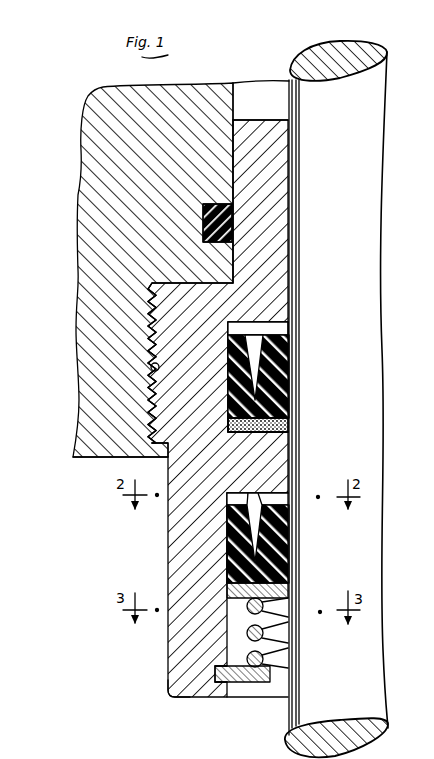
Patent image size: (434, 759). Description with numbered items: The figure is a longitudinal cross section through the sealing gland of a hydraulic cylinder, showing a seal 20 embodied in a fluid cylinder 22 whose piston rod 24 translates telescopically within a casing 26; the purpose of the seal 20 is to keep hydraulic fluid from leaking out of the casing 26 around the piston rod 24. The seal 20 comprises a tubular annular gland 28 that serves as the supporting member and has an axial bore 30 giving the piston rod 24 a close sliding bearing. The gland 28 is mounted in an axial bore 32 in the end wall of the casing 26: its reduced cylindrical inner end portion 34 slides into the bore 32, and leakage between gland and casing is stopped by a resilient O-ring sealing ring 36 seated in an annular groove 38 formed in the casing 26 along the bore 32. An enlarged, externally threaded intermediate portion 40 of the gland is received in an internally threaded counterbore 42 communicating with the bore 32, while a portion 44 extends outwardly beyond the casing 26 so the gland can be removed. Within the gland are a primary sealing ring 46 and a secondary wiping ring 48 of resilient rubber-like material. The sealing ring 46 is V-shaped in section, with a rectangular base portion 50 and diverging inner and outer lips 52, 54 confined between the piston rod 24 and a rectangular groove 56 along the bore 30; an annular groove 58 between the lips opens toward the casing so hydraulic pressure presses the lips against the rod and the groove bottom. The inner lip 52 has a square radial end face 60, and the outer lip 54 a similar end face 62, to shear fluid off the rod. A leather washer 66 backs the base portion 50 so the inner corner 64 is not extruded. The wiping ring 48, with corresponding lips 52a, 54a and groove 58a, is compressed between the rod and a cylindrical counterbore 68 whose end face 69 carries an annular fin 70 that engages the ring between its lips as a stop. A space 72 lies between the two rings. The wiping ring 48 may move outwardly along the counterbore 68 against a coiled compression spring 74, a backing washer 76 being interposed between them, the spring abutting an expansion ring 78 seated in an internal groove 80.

The seal 20 is at (255, 701).
The fluid cylinder 22 is at (54, 452).
The piston rod 24 is at (341, 44).
The casing 26 is at (100, 126).
The gland 28 is at (168, 681).
The axial bore 30 is at (290, 296).
The axial bore 32 is at (240, 88).
The inner end portion 34 is at (265, 148).
The sealing ring 36 is at (205, 235).
The annular groove 38 is at (205, 210).
The intermediate portion 40 is at (150, 406).
The counterbore 42 is at (151, 366).
The portion 44 is at (175, 549).
The sealing ring 46 is at (291, 395).
The wiping ring 48 is at (291, 568).
The base portion 50 is at (288, 412).
The inner lip 52 is at (288, 368).
The inner lip 52a is at (283, 521).
The outer lip 54 is at (227, 354).
The outer lip 54a is at (227, 513).
The groove 56 is at (228, 329).
The annular groove 58 is at (268, 350).
The annular groove 58a is at (258, 553).
The end face 60 is at (286, 332).
The end face 62 is at (252, 323).
The inner corner 64 is at (288, 428).
The washer 66 is at (268, 426).
The counterbore 68 is at (228, 561).
The end face 69 is at (226, 497).
The annular fin 70 is at (292, 498).
The space 72 is at (262, 500).
The spring 74 is at (248, 633).
The backing washer 76 is at (280, 596).
The expansion ring 78 is at (268, 670).
The internal groove 80 is at (215, 673).